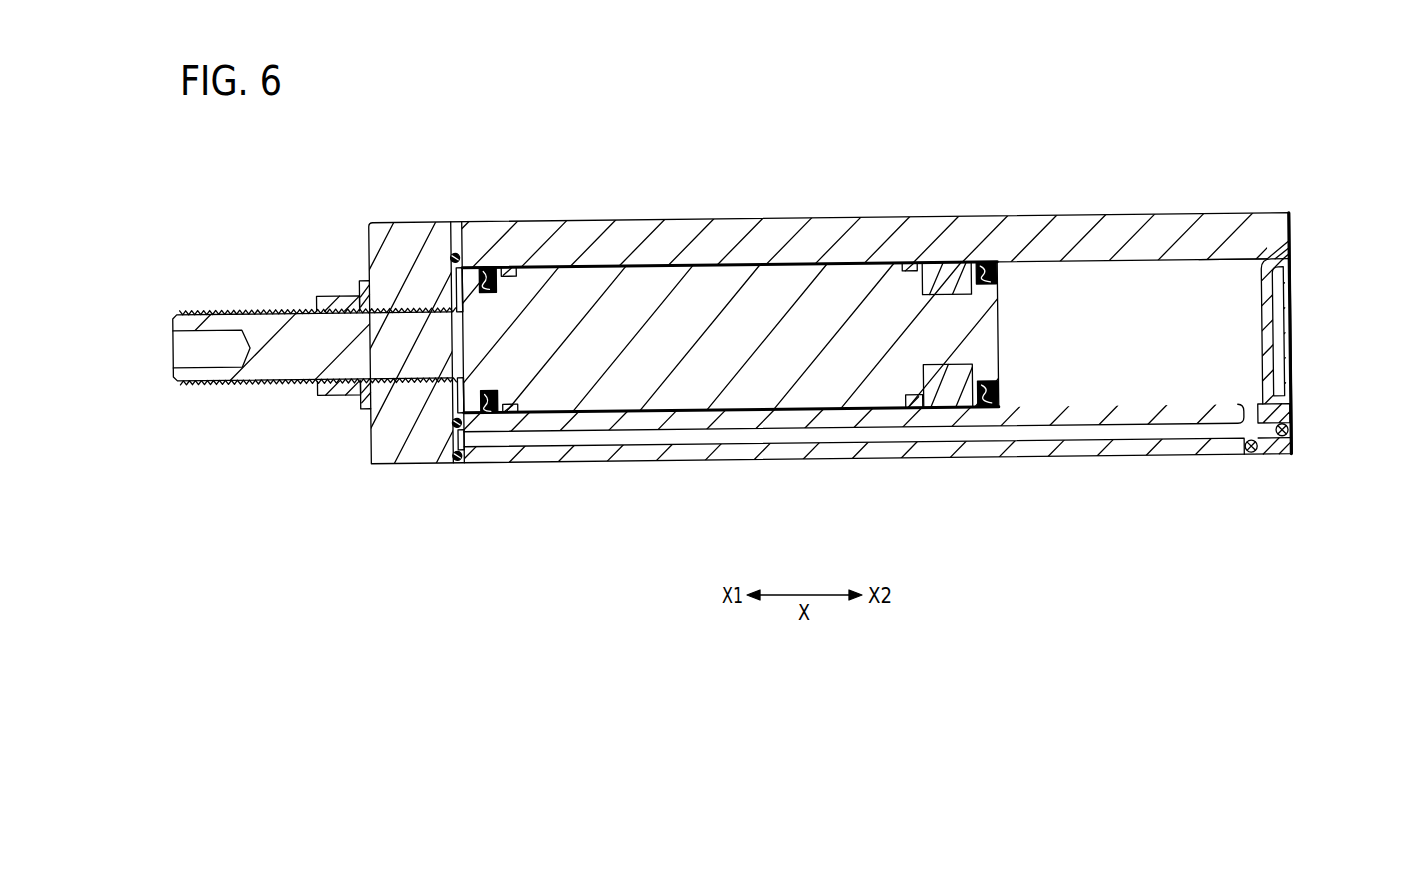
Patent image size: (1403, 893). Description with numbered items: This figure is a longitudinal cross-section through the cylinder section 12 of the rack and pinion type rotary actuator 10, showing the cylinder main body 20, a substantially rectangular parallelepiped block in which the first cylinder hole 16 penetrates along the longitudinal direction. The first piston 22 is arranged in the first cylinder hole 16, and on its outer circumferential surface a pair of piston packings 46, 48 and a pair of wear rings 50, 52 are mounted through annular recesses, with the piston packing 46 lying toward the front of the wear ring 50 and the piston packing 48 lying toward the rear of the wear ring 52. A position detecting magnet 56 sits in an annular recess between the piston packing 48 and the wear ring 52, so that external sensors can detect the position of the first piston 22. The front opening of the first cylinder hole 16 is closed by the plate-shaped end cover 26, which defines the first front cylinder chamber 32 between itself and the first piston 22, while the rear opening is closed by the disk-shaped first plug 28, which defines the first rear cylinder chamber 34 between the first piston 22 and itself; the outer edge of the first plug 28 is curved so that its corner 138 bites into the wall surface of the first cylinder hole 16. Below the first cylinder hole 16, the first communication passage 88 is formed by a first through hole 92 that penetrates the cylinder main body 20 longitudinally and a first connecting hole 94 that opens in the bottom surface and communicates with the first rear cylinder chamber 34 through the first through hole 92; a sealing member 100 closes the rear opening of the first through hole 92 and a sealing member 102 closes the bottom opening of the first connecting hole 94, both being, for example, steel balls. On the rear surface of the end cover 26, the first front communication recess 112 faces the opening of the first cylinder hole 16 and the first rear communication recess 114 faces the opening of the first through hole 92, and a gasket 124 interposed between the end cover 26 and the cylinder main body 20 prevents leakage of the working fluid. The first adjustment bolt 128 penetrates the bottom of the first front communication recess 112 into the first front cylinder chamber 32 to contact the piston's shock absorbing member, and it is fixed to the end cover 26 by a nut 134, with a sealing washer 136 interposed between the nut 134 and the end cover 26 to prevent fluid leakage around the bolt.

The rotary actuator 10 is at (380, 145).
The cylinder section 12 is at (1268, 204).
The first cylinder hole 16 is at (1050, 262).
The cylinder main body 20 is at (1268, 237).
The first piston 22 is at (984, 340).
The end cover 26 is at (425, 464).
The first plug 28 is at (1268, 330).
The first front cylinder chamber 32 is at (459, 262).
The first rear cylinder chamber 34 is at (1172, 283).
The piston packing 46 is at (485, 414).
The piston packing 48 is at (987, 412).
The wear ring 50 is at (517, 414).
The wear ring 52 is at (912, 412).
The position detecting magnet 56 is at (947, 397).
The first communication passage 88 is at (1252, 507).
The first through hole 92 is at (1107, 428).
The first connecting hole 94 is at (1240, 412).
The sealing member 100 is at (1292, 428).
The sealing member 102 is at (1280, 453).
The first front communication recess 112 is at (470, 390).
The first rear communication recess 114 is at (467, 440).
The gasket 124 is at (455, 462).
The first adjustment bolt 128 is at (212, 385).
The nut 134 is at (333, 300).
The sealing washer 136 is at (368, 280).
The corner 138 is at (1292, 248).